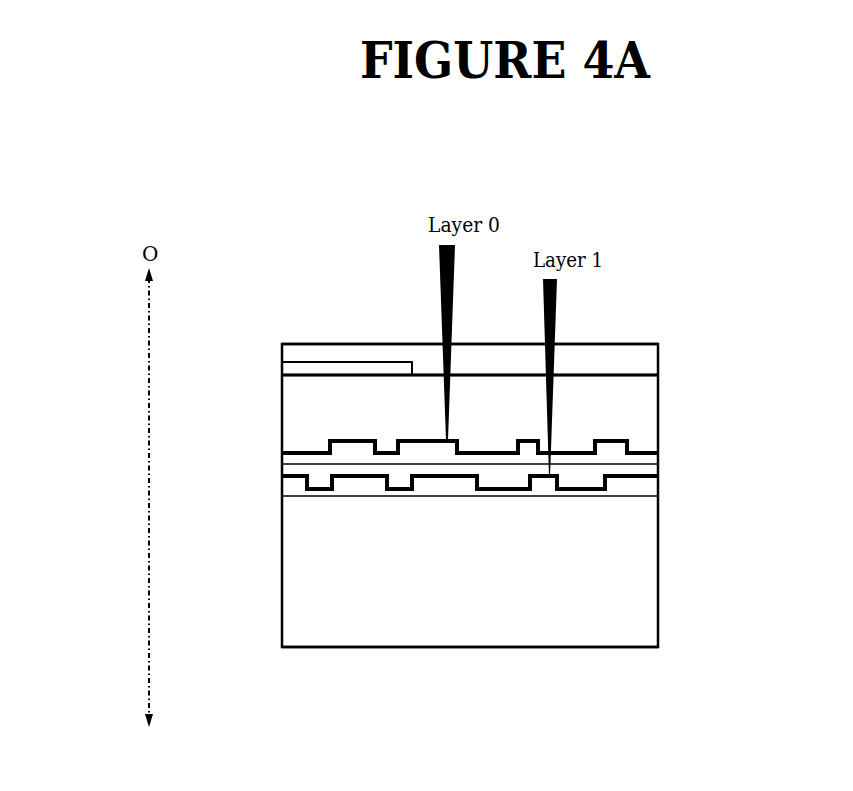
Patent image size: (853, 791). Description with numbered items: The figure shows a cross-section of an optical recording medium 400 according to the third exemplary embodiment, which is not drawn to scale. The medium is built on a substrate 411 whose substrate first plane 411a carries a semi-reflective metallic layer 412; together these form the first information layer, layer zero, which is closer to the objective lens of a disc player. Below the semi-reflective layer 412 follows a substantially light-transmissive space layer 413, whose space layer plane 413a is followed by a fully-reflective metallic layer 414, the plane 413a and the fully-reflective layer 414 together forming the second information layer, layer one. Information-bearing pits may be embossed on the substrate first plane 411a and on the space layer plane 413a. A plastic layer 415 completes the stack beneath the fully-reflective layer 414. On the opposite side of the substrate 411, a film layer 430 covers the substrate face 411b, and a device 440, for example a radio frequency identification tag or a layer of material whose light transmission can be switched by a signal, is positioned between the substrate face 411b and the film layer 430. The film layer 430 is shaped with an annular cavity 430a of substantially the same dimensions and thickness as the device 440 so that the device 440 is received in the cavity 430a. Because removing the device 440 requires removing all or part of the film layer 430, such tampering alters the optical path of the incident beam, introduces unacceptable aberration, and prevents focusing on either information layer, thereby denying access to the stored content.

The optical recording medium 400 is at (848, 268).
The film layer 430 is at (603, 357).
The annular cavity 430a is at (357, 358).
The device 440 is at (303, 370).
The substrate 411 is at (648, 415).
The substrate first plane 411a is at (645, 452).
The substrate face 411b is at (645, 378).
The semi-reflective layer 412 is at (298, 452).
The space layer 413 is at (300, 464).
The space layer plane 413a is at (590, 483).
The fully-reflective layer 414 is at (297, 477).
The plastic layer 415 is at (627, 487).